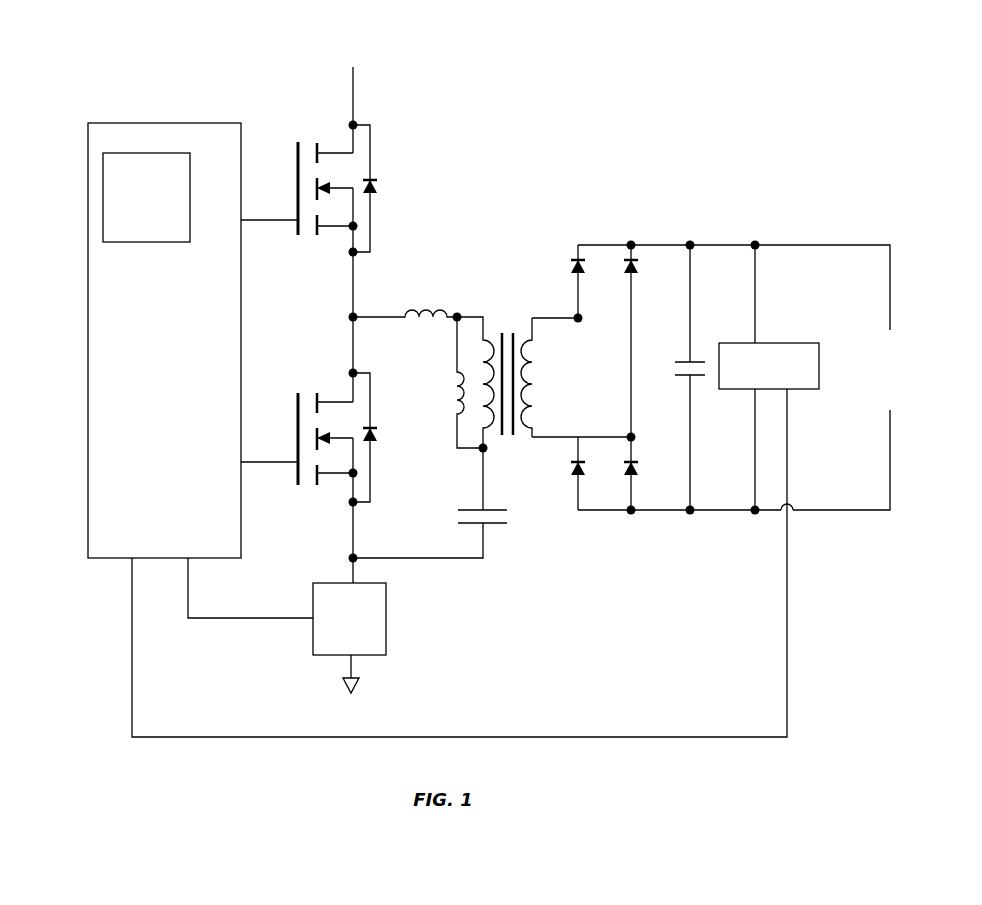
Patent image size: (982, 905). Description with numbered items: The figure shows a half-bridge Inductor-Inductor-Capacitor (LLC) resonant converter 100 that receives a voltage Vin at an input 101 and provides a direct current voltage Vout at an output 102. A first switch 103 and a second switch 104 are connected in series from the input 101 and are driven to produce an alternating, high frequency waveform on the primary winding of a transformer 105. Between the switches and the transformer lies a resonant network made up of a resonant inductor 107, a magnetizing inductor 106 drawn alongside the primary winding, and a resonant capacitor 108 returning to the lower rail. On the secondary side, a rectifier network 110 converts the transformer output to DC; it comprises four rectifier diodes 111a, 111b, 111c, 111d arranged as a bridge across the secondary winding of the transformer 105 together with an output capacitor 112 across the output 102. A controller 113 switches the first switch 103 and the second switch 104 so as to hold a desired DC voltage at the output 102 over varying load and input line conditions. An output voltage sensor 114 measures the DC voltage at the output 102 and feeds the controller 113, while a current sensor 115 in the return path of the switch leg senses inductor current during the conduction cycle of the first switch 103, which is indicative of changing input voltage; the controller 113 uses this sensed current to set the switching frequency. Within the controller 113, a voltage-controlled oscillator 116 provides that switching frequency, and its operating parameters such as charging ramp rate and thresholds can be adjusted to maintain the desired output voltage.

The LLC resonant converter 100 is at (502, 73).
The input 101 is at (370, 77).
The output 102 is at (933, 329).
The first switch 103 is at (298, 152).
The second switch 104 is at (298, 393).
The transformer 105 is at (497, 298).
The magnetizing inductor 106 is at (455, 392).
The resonant inductor 107 is at (408, 304).
The resonant capacitor 108 is at (493, 528).
The rectifier network 110 is at (719, 342).
The rectifier diode 111a is at (572, 268).
The rectifier diode 111b is at (572, 469).
The rectifier diode 111c is at (637, 271).
The rectifier diode 111d is at (637, 471).
The output capacitor 112 is at (678, 361).
The controller 113 is at (141, 242).
The output voltage sensor 114 is at (773, 343).
The current sensor 115 is at (386, 610).
The voltage-controlled oscillator 116 is at (143, 123).